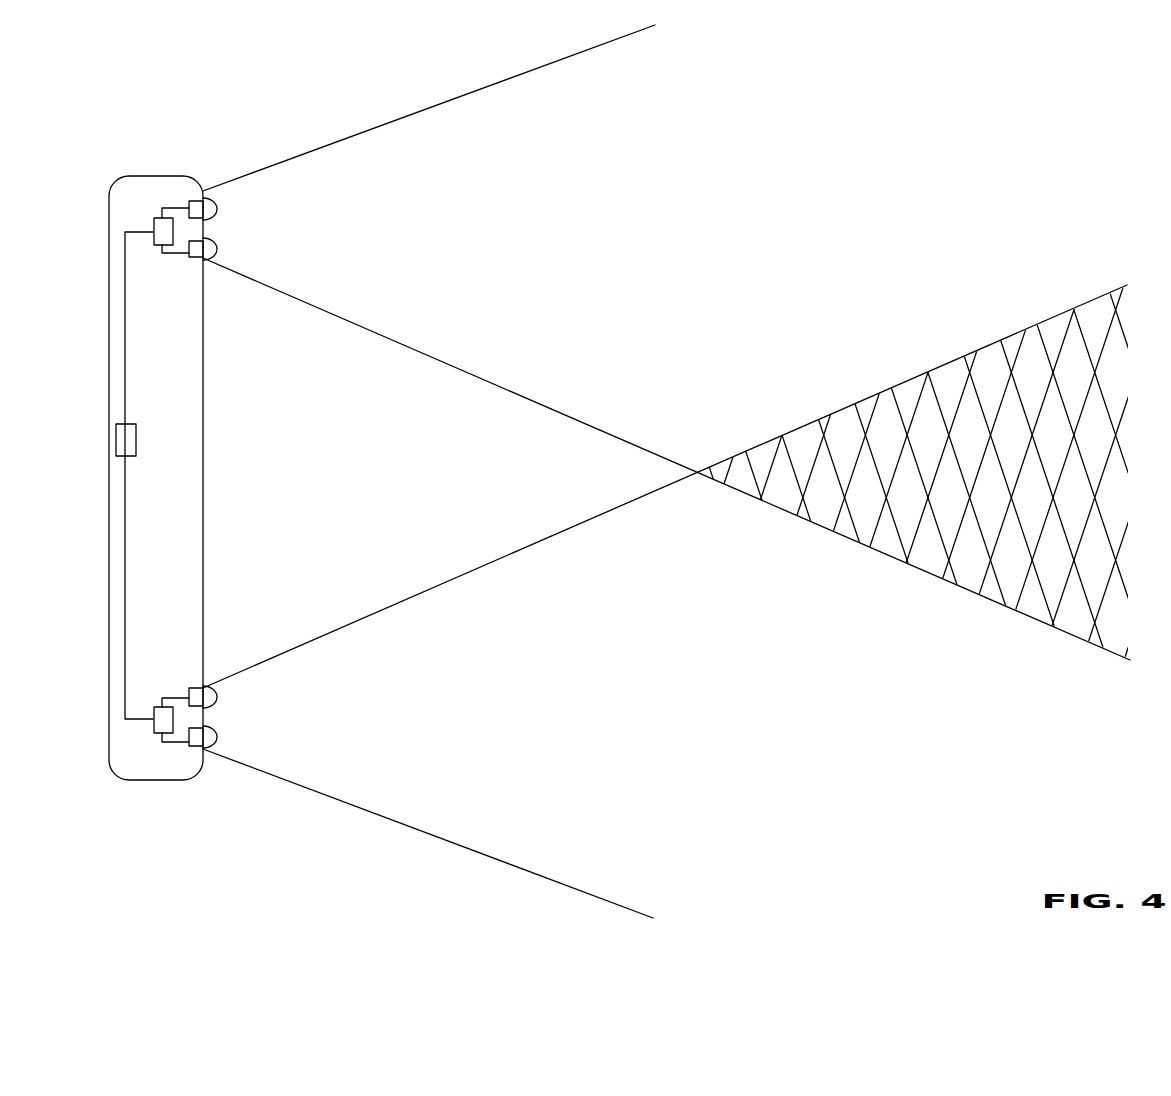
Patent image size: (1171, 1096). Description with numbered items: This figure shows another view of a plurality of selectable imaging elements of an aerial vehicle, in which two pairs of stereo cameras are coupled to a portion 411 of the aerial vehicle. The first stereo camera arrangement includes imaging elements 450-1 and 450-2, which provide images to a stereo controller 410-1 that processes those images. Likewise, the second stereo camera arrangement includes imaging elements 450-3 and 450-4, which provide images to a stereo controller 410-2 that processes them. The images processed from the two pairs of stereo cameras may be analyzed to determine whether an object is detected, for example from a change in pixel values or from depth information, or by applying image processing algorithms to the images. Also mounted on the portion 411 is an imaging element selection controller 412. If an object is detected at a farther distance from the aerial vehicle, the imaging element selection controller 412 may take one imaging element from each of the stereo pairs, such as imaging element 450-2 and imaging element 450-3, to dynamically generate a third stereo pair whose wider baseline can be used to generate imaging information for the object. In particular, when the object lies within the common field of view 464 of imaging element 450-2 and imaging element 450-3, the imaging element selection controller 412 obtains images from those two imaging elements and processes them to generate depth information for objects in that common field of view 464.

The portion of an aerial vehicle 411 is at (147, 176).
The imaging element selection controller 412 is at (123, 440).
The stereo controller 410-1 is at (155, 223).
The stereo controller 410-2 is at (158, 725).
The imaging element 450-1 is at (230, 203).
The imaging element 450-2 is at (220, 252).
The imaging element 450-3 is at (223, 697).
The imaging element 450-4 is at (220, 745).
The common field of view 464 is at (952, 477).